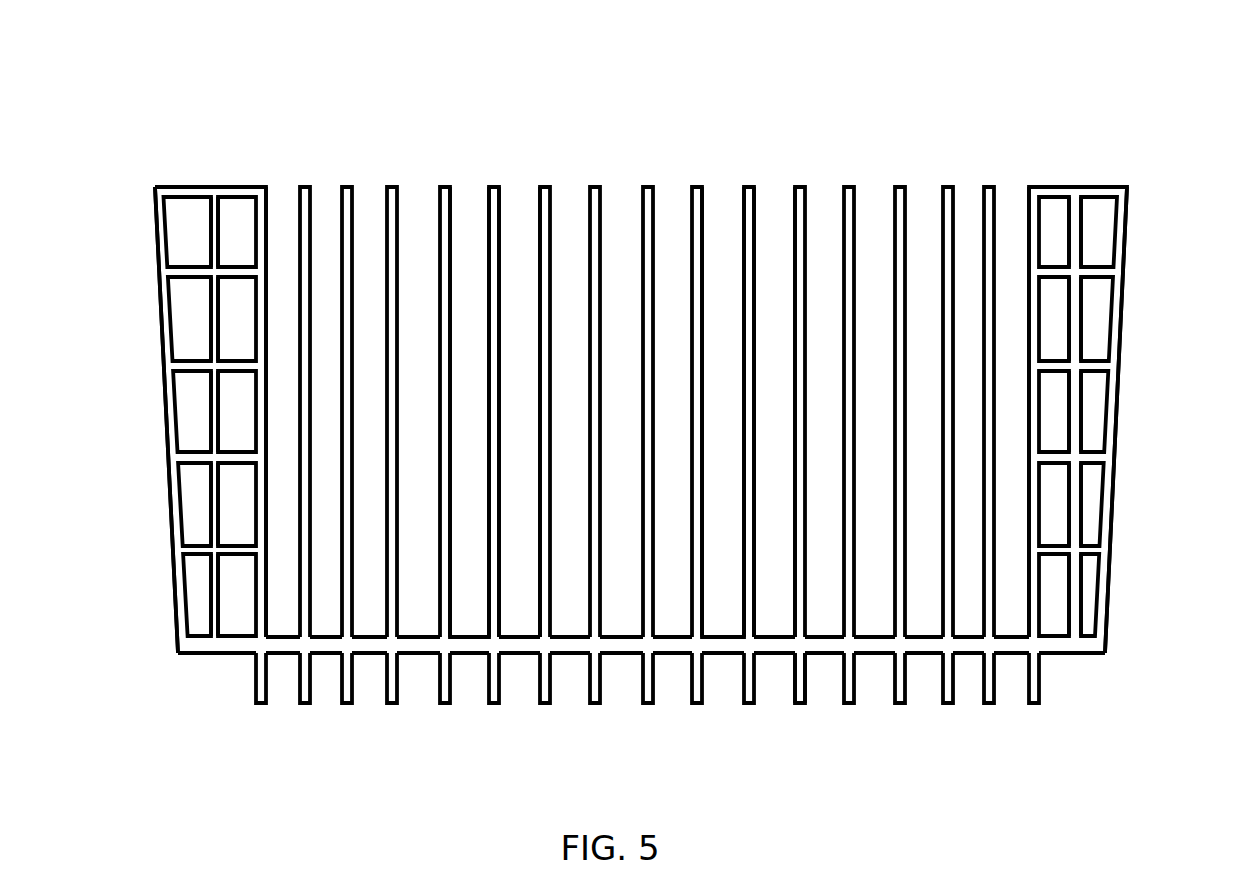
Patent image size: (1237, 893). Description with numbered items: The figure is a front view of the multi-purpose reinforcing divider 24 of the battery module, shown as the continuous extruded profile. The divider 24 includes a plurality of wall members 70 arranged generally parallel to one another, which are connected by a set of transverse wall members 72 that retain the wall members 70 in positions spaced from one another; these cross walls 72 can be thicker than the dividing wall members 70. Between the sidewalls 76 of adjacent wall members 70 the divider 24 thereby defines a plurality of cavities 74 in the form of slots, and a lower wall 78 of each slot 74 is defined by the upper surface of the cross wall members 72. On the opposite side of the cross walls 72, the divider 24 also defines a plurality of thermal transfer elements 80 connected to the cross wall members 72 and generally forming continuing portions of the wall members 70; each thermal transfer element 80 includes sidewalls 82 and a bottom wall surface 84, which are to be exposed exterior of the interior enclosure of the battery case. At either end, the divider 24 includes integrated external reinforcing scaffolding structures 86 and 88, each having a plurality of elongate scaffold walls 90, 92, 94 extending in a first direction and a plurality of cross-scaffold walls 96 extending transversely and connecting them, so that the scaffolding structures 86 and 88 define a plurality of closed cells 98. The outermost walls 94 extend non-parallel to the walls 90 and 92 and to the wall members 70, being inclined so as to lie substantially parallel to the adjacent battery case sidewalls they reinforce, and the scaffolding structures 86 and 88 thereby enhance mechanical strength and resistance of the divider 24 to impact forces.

The reinforcing divider 24 is at (609, 83).
The wall members 70 is at (390, 183).
The transverse wall members 72 is at (328, 648).
The cavities 74 is at (477, 195).
The sidewalls 76 is at (790, 258).
The lower wall 78 is at (510, 625).
The thermal transfer elements 80 is at (258, 703).
The sidewalls 82 is at (796, 705).
The bottom wall surface 84 is at (810, 705).
The reinforcing scaffolding structure 86 is at (213, 147).
The reinforcing scaffolding structure 88 is at (1083, 144).
The elongate scaffold wall 90 is at (260, 232).
The elongate scaffold wall 92 is at (213, 215).
The outermost wall 94 is at (152, 218).
The cross-scaffold walls 96 is at (183, 185).
The closed cells 98 is at (180, 238).